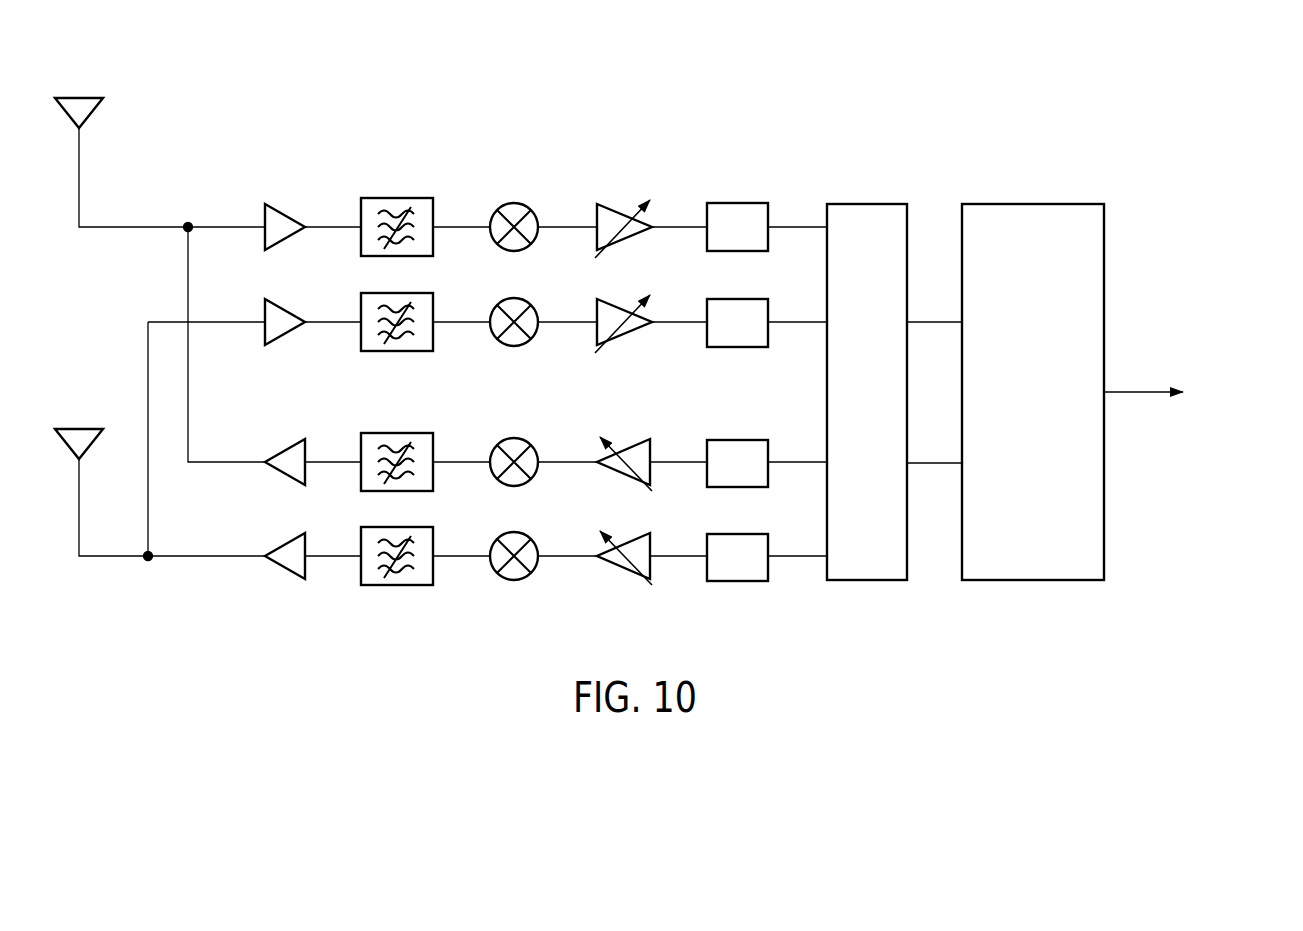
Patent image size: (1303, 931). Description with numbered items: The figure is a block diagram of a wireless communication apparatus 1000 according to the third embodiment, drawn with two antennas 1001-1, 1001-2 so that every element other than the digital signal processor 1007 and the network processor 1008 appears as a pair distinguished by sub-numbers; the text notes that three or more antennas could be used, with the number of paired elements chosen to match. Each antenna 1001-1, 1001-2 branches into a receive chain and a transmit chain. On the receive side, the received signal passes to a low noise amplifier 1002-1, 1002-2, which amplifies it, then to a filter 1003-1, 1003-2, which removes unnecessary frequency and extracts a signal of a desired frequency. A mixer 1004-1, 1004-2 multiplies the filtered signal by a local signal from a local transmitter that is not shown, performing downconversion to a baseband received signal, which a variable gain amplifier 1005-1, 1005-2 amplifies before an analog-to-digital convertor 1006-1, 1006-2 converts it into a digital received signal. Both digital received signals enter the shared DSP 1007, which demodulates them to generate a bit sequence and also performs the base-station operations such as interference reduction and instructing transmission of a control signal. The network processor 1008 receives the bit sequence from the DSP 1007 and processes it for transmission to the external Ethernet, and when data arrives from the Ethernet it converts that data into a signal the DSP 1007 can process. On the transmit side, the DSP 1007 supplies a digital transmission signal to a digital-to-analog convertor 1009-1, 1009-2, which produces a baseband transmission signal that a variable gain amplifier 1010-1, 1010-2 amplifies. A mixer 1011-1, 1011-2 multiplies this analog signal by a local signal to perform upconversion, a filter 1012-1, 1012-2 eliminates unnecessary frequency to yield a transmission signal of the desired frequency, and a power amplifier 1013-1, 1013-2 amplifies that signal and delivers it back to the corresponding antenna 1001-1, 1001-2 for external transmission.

The wireless communication apparatus 1000 is at (1063, 98).
The antenna 1001-1 is at (78, 97).
The antenna 1001-2 is at (78, 428).
The low noise amplifier 1002-1 is at (277, 204).
The low noise amplifier 1002-2 is at (277, 298).
The filter 1003-1 is at (397, 198).
The filter 1003-2 is at (371, 293).
The mixer 1004-1 is at (514, 203).
The mixer 1004-2 is at (514, 298).
The variable gain amplifier 1005-1 is at (609, 204).
The variable gain amplifier 1005-2 is at (611, 300).
The analog-to-digital convertor 1006-1 is at (736, 201).
The analog-to-digital convertor 1006-2 is at (736, 298).
The digital signal processor 1007 is at (865, 203).
The network processor 1008 is at (1026, 204).
The digital-to-analog convertor 1009-1 is at (736, 439).
The digital-to-analog convertor 1009-2 is at (736, 533).
The variable gain amplifier 1010-1 is at (626, 443).
The variable gain amplifier 1010-2 is at (627, 535).
The mixer 1011-1 is at (514, 438).
The mixer 1011-2 is at (514, 532).
The filter 1012-1 is at (397, 433).
The filter 1012-2 is at (371, 527).
The power amplifier 1013-1 is at (277, 443).
The power amplifier 1013-2 is at (277, 537).